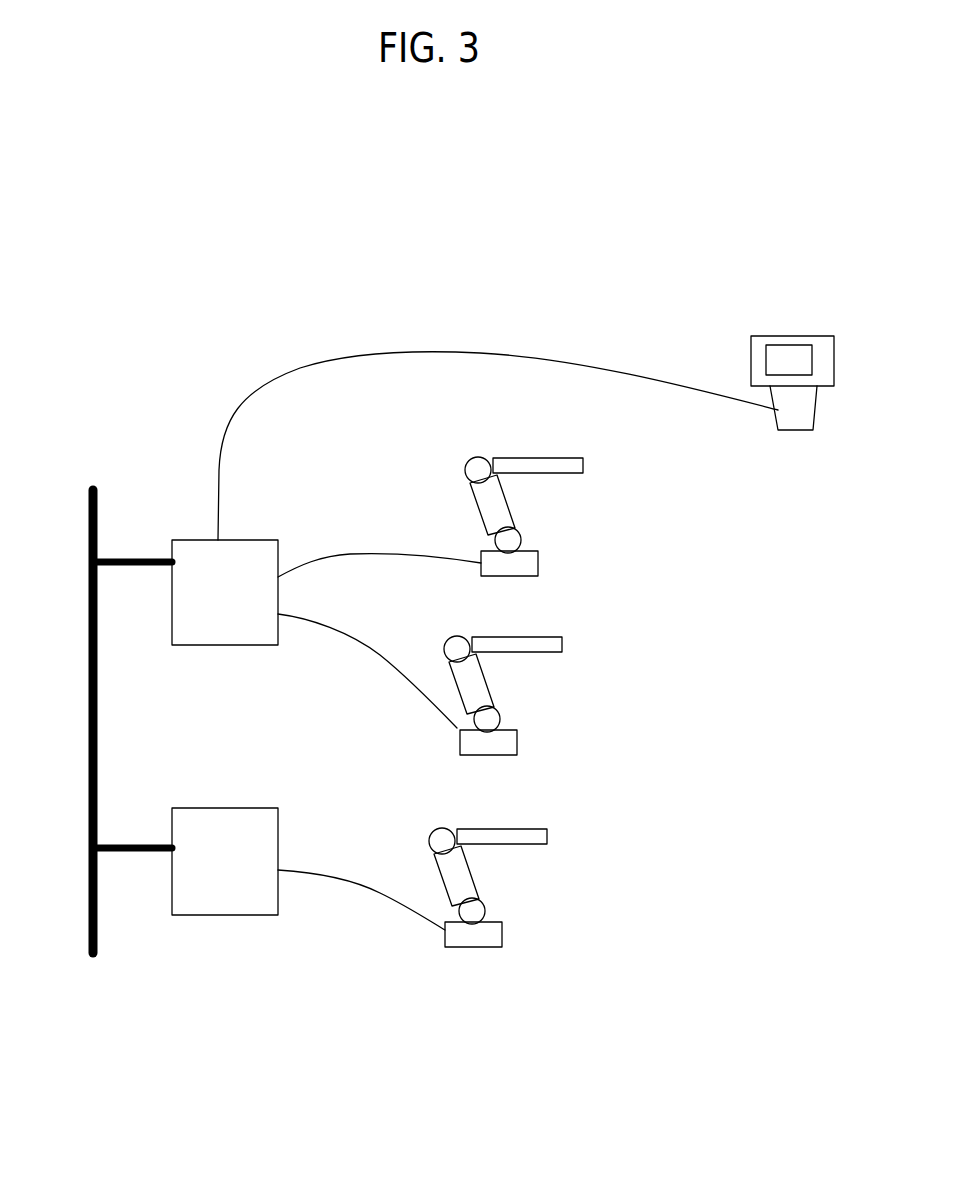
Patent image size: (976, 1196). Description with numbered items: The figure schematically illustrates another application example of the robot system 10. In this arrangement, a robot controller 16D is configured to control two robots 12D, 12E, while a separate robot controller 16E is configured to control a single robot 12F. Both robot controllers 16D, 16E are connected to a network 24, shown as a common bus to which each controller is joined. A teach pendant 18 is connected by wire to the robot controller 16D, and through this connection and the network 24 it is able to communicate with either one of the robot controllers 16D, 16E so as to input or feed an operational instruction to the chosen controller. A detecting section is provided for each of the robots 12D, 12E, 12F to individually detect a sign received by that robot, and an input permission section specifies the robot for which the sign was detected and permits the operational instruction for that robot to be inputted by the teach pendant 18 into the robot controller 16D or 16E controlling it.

The robot system 10 is at (535, 250).
The robot 12D is at (572, 540).
The robot 12E is at (556, 705).
The robot 12F is at (534, 890).
The robot controller 16D is at (193, 525).
The robot controller 16E is at (216, 930).
The teach pendant 18 is at (790, 325).
The network 24 is at (88, 742).